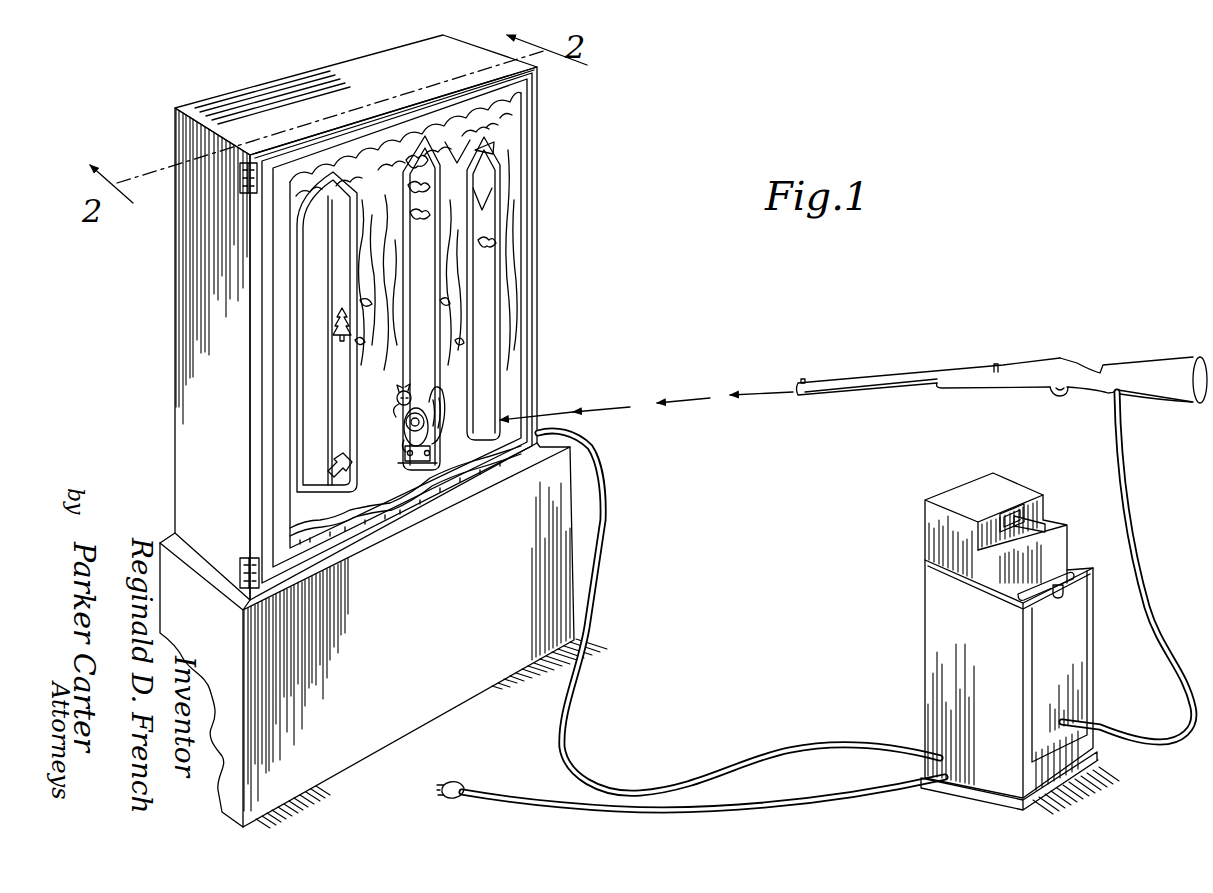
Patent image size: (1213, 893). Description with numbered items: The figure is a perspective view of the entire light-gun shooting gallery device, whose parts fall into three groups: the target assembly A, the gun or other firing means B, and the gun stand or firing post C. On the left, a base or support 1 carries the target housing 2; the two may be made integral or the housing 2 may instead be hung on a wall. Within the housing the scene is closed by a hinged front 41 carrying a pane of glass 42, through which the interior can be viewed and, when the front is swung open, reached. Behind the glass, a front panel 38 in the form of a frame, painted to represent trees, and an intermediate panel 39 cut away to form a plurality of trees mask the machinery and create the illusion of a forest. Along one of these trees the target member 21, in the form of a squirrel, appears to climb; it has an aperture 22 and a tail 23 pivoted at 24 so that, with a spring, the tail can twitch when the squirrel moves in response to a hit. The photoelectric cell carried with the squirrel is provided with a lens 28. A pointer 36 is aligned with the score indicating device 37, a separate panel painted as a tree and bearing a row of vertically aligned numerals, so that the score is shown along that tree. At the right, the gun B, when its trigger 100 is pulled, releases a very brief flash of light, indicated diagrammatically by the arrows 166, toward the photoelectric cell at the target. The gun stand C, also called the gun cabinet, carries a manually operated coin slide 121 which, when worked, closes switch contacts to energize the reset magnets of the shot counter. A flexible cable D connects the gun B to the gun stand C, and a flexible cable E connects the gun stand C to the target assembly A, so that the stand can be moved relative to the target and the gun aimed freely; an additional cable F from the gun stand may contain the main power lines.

The base 1 is at (448, 667).
The target housing 2 is at (177, 422).
The target member 21 is at (418, 462).
The aperture 22 is at (421, 410).
The tail 23 is at (448, 404).
The pivot 24 is at (429, 455).
The lens 28 is at (403, 437).
The pointer 36 is at (328, 466).
The score indicating device 37 is at (307, 373).
The front panel 38 is at (290, 297).
The intermediate panel 39 is at (365, 327).
The hinged front 41 is at (531, 73).
The pane of glass 42 is at (527, 148).
The trigger 100 is at (1061, 395).
The coin slide 121 is at (1046, 525).
The arrows 166 is at (665, 390).
The target assembly A is at (541, 247).
The gun B is at (1044, 359).
The gun stand C is at (921, 592).
The flexible cable D is at (1129, 486).
The flexible cable E is at (606, 575).
The cable F is at (531, 760).